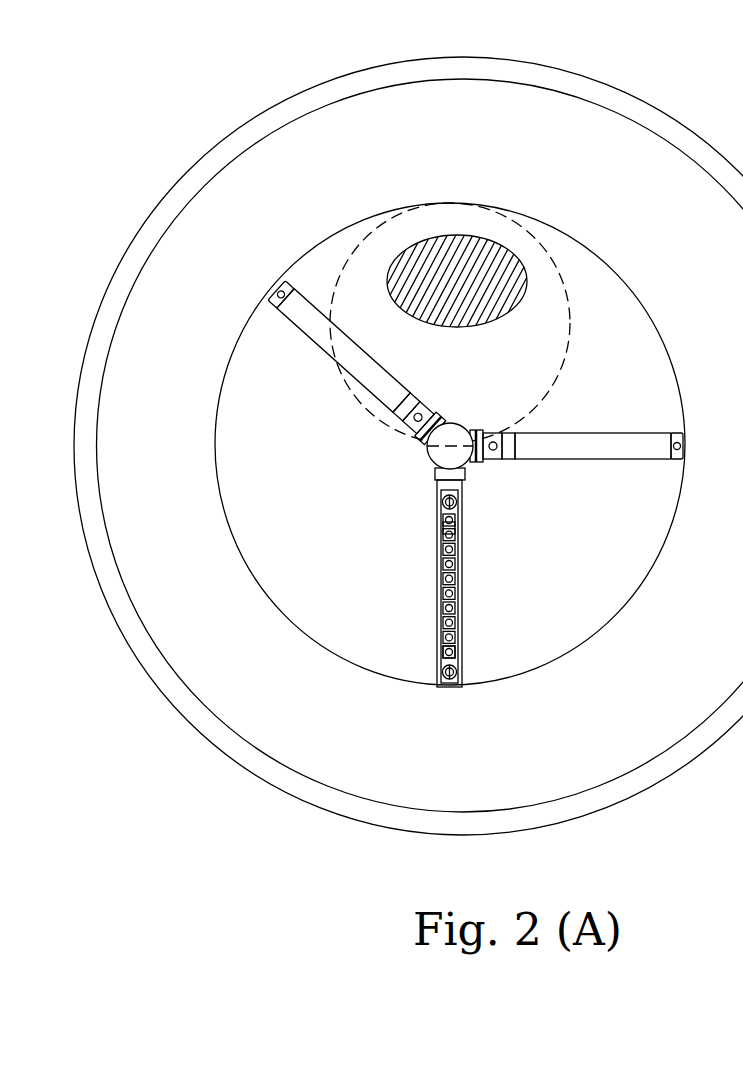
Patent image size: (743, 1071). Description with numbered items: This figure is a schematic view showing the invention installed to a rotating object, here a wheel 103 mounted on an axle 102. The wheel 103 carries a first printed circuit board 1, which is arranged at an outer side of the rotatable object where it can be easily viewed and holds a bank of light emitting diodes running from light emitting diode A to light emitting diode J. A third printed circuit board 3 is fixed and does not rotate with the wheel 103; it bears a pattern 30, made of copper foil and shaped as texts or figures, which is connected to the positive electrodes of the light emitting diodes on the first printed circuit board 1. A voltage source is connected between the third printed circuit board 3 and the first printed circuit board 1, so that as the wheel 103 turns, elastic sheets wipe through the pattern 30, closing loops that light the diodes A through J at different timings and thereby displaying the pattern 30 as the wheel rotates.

The wheel 103 is at (624, 104).
The third printed circuit board 3 is at (516, 220).
The pattern 30 is at (408, 242).
The first printed circuit board 1 is at (470, 490).
The axle 102 is at (436, 469).
The light emitting diode A is at (442, 529).
The light emitting diode J is at (443, 651).